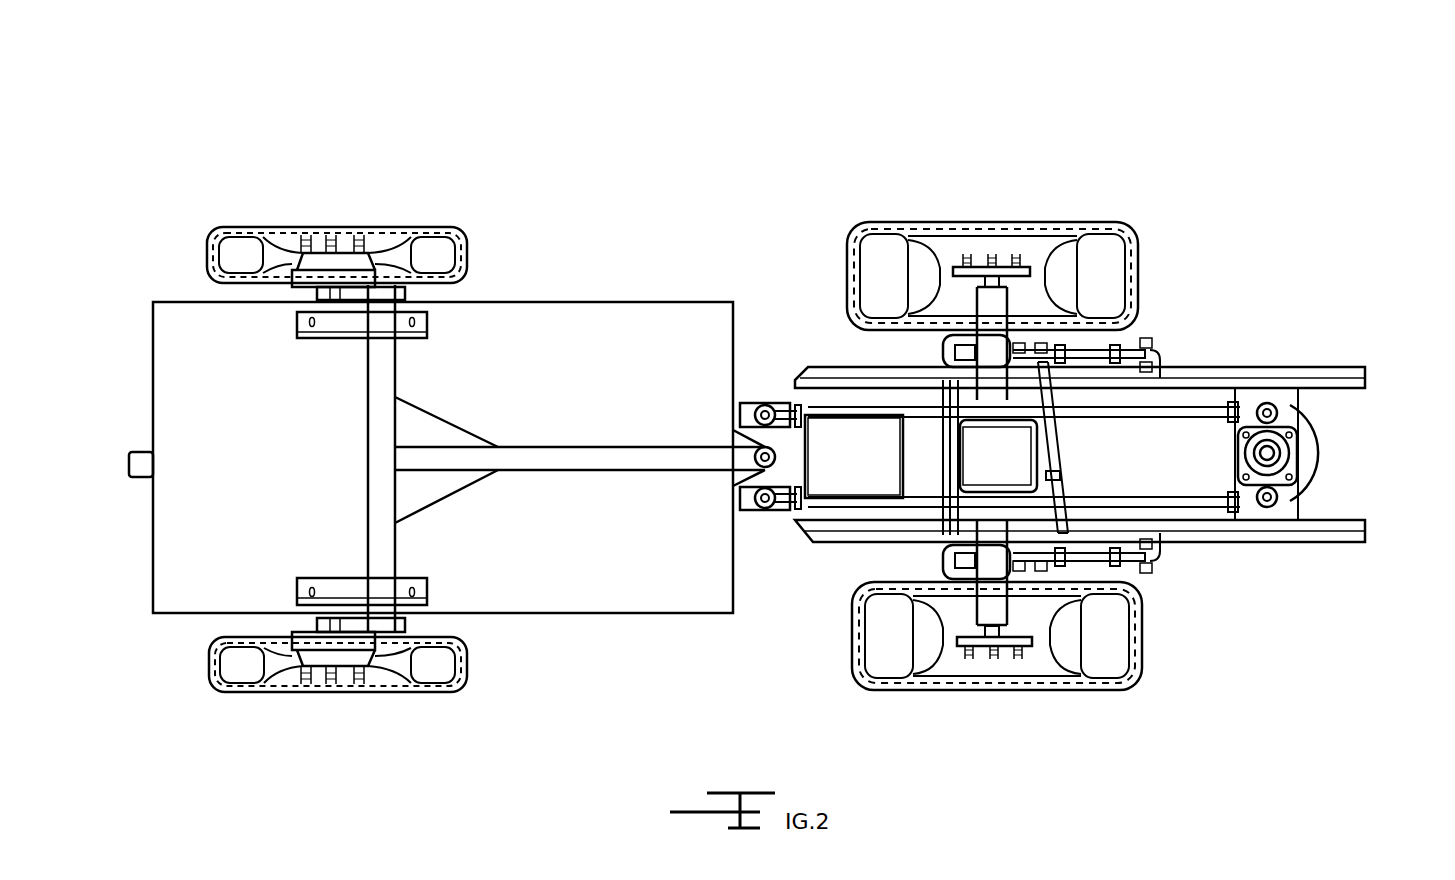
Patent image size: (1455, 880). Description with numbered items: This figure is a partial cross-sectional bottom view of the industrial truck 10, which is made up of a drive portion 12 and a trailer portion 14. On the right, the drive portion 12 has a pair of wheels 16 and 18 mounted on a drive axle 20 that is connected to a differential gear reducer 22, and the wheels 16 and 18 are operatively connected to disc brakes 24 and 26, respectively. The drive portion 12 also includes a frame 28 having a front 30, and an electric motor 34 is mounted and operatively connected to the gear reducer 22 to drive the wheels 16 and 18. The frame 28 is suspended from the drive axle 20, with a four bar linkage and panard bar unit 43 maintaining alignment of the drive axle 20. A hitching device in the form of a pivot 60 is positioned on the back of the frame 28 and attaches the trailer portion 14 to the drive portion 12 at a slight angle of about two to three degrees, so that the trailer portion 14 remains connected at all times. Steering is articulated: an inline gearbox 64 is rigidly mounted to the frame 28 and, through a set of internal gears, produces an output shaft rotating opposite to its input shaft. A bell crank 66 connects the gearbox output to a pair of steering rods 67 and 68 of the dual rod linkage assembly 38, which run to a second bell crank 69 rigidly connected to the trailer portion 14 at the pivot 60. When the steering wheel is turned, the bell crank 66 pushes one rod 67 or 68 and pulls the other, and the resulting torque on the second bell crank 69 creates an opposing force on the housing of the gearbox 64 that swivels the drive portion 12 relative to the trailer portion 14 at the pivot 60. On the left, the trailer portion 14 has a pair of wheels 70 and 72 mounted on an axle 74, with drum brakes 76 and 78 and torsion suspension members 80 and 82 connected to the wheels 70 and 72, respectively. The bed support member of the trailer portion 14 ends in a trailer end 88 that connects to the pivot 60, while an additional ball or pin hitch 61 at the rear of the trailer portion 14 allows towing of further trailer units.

The truck 10 is at (1373, 240).
The drive portion 12 is at (1068, 446).
The trailer portion 14 is at (625, 222).
The wheel 16 is at (1140, 650).
The wheel 18 is at (1135, 240).
The drive axle 20 is at (1005, 290).
The differential gear reducer 22 is at (1022, 456).
The disc brake 24 is at (1030, 650).
The disc brake 26 is at (922, 228).
The frame 28 is at (1215, 532).
The front 30 is at (1335, 367).
The electric motor 34 is at (853, 465).
The dual rod linkage assembly 38 is at (1270, 503).
The four bar linkage and panard bar unit 43 is at (1062, 500).
The pivot 60 is at (775, 503).
The ball or pin hitch 61 is at (145, 478).
The inline gearbox 64 is at (1290, 440).
The bell crank 66 is at (1300, 487).
The steering rod 67 is at (1183, 502).
The steering rod 68 is at (1195, 400).
The second bell crank 69 is at (772, 408).
The wheel 70 is at (465, 672).
The wheel 72 is at (452, 232).
The axle 74 is at (368, 372).
The drum brake 76 is at (310, 645).
The drum brake 78 is at (300, 282).
The torsion suspension member 80 is at (422, 592).
The torsion suspension member 82 is at (422, 325).
The trailer end 88 is at (742, 405).